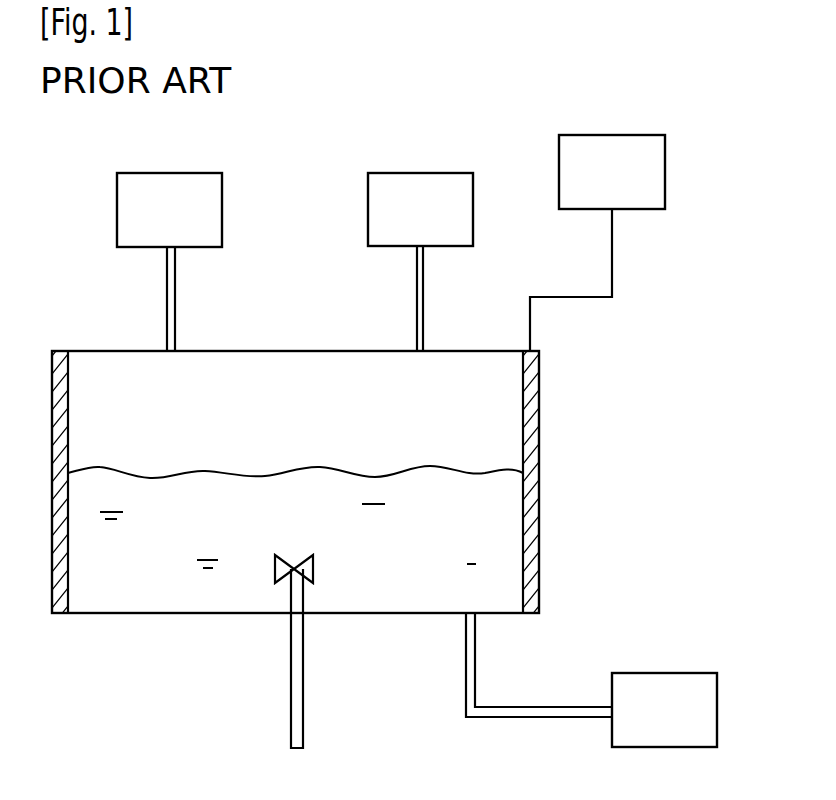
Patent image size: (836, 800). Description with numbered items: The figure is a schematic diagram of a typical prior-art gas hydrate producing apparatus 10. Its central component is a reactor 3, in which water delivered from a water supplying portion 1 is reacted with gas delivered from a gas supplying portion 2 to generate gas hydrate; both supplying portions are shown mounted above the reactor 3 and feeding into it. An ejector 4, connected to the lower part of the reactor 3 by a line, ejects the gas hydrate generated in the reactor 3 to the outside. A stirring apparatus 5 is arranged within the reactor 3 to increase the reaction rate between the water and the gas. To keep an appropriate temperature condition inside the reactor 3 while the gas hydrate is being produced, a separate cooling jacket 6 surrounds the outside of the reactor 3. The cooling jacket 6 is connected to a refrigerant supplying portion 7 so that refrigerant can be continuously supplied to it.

The gas hydrate producing apparatus 10 is at (785, 89).
The water supplying portion 1 is at (170, 173).
The gas supplying portion 2 is at (418, 173).
The reactor 3 is at (295, 351).
The ejector 4 is at (665, 673).
The stirring apparatus 5 is at (291, 679).
The cooling jacket 6 is at (535, 408).
The refrigerant supplying portion 7 is at (612, 135).